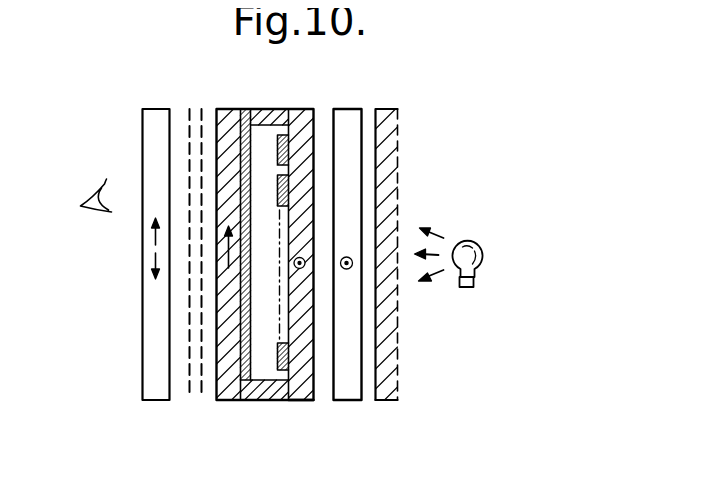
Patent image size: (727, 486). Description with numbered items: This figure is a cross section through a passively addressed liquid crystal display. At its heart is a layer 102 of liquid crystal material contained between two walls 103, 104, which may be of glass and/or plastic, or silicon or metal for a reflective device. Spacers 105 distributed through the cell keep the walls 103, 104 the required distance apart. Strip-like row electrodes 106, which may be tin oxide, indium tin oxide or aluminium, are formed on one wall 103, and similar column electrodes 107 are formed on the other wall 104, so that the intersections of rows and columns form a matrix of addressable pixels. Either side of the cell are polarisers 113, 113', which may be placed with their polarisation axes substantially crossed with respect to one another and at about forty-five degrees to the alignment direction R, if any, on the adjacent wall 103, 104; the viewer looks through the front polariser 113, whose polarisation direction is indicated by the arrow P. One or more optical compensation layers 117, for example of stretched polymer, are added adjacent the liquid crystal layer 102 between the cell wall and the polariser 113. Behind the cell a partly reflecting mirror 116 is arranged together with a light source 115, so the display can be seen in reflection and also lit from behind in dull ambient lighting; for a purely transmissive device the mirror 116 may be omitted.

The polariser 113 is at (151, 233).
The optical compensation layer 117 is at (190, 402).
The wall 103 is at (230, 121).
The column electrodes 107 is at (260, 93).
The spacers 105 is at (276, 111).
The row electrodes 106 is at (313, 138).
The layer of liquid crystal material 102 is at (265, 372).
The wall 104 is at (298, 403).
The polariser 113' is at (396, 241).
The partly reflecting mirror 116 is at (378, 402).
The light source 115 is at (467, 243).
The polarization direction P is at (152, 253).
The alignment direction R is at (230, 268).